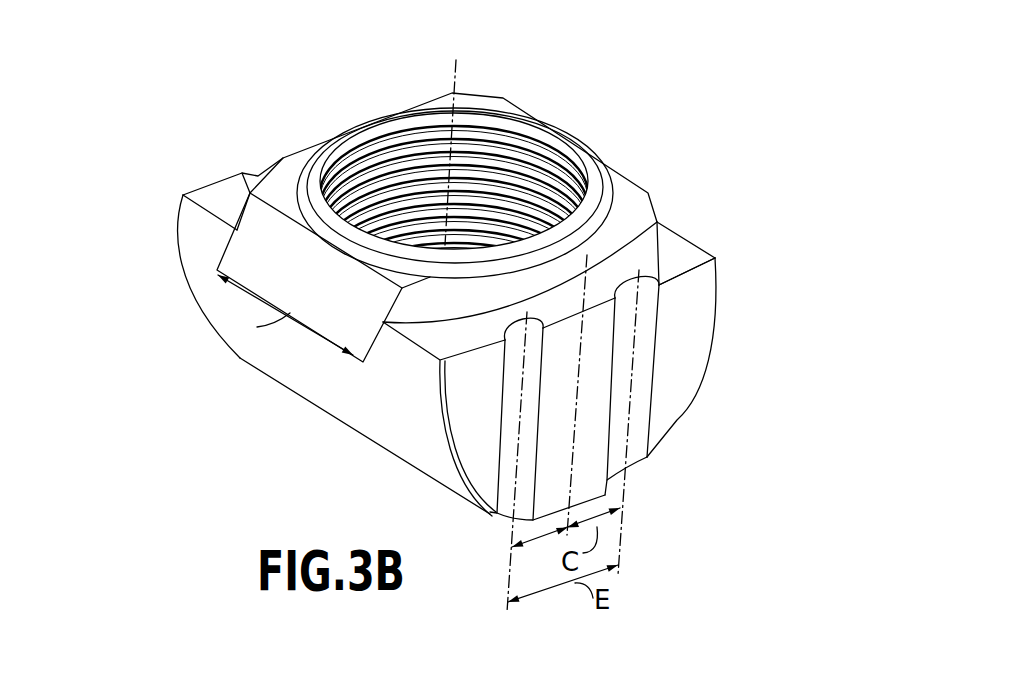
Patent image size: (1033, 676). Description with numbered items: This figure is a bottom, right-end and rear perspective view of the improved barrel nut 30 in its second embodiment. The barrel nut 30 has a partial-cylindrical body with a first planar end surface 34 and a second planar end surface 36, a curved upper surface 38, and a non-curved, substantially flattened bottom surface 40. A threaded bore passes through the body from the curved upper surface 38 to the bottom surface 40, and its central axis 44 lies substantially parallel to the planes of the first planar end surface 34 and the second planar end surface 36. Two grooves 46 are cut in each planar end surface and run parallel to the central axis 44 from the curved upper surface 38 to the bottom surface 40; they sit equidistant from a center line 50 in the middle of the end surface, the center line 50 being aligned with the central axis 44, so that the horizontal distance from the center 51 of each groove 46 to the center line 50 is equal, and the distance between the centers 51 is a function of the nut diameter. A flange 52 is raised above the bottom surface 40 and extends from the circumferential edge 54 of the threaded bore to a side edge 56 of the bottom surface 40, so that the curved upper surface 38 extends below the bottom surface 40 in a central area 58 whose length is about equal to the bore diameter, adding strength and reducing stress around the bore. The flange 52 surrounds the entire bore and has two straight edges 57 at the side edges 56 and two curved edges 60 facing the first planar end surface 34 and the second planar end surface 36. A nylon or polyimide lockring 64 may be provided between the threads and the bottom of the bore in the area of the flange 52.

The barrel nut 30 is at (110, 237).
The first planar end surface 34 is at (177, 220).
The second planar end surface 36 is at (697, 347).
The curved upper surface 38 is at (377, 420).
The bottom surface 40 is at (223, 187).
The central axis 44 is at (455, 60).
The grooves 46 is at (641, 352).
The center line 50 is at (580, 340).
The center of groove 51 is at (509, 555).
The flange 52 is at (280, 187).
The circumferential edge 54 is at (590, 187).
The side edge 56 is at (218, 222).
The straight edges 57 is at (370, 268).
The central area 58 is at (220, 198).
The curved edges 60 is at (642, 218).
The lockring 64 is at (397, 128).